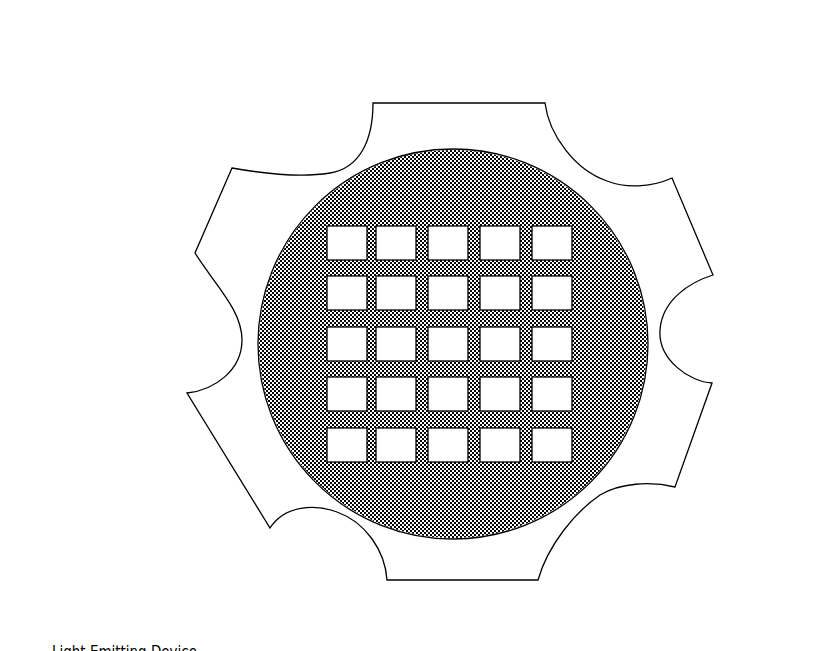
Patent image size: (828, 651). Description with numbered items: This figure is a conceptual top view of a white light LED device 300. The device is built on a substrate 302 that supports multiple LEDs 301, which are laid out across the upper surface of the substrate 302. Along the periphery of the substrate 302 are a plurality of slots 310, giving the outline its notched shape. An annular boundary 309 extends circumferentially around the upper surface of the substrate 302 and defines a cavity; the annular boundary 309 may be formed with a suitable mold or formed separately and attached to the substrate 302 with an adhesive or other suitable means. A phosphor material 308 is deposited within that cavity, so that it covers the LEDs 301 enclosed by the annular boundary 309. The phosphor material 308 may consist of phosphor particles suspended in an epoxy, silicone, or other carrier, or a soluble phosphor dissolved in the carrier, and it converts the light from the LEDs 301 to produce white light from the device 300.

The white light LED device 300 is at (148, 97).
The LEDs 301 is at (449, 344).
The substrate 302 is at (237, 272).
The phosphor material 308 is at (556, 192).
The annular boundary 309 is at (592, 201).
The slots 310 is at (330, 160).